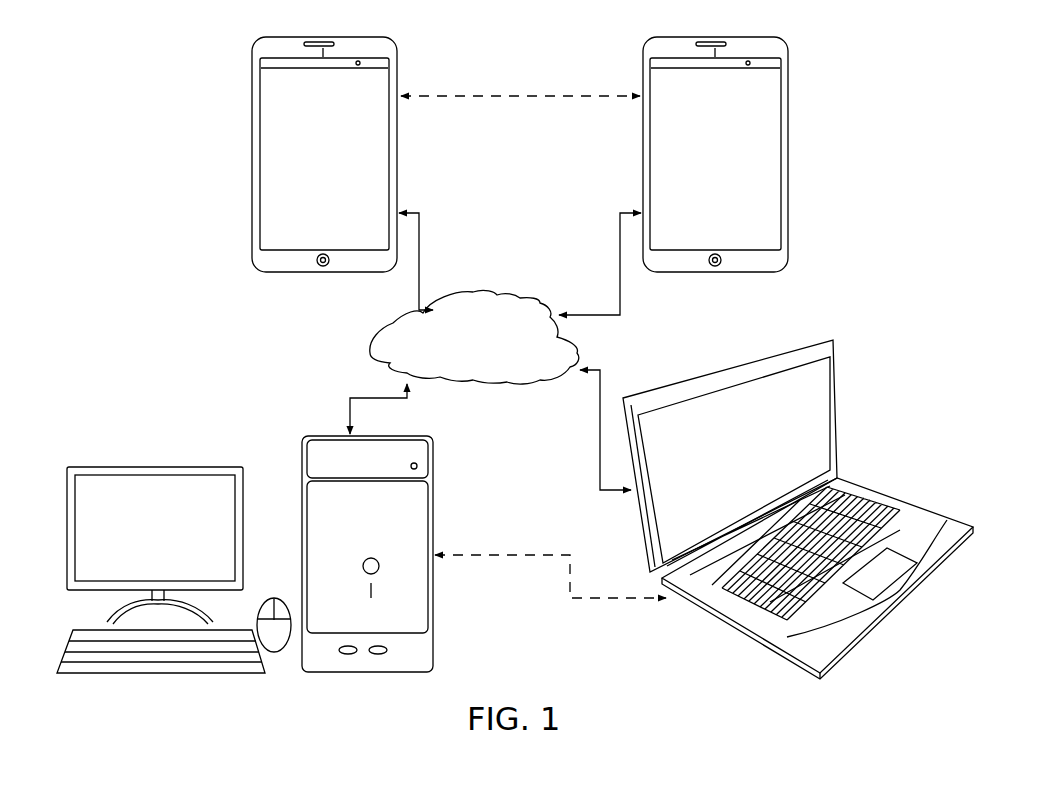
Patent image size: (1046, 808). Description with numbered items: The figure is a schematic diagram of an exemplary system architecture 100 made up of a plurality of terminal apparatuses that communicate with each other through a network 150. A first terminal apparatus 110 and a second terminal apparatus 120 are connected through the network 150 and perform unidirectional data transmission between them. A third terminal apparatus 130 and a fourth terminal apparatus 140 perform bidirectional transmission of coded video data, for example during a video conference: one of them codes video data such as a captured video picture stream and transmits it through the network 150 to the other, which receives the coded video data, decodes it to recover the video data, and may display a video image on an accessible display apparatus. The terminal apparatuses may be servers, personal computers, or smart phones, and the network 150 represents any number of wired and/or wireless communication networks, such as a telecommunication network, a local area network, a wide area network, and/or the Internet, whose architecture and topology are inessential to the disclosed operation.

The system architecture 100 is at (891, 31).
The first terminal apparatus 110 is at (837, 393).
The second terminal apparatus 120 is at (433, 512).
The third terminal apparatus 130 is at (254, 177).
The fourth terminal apparatus 140 is at (787, 188).
The network 150 is at (474, 337).